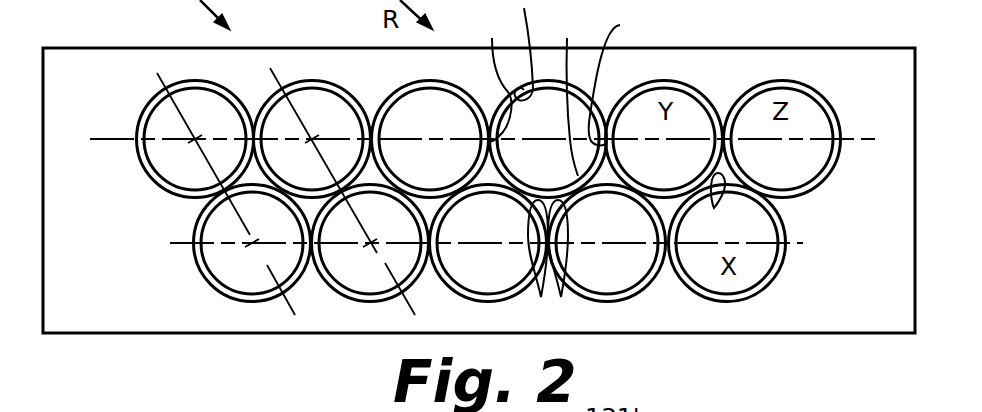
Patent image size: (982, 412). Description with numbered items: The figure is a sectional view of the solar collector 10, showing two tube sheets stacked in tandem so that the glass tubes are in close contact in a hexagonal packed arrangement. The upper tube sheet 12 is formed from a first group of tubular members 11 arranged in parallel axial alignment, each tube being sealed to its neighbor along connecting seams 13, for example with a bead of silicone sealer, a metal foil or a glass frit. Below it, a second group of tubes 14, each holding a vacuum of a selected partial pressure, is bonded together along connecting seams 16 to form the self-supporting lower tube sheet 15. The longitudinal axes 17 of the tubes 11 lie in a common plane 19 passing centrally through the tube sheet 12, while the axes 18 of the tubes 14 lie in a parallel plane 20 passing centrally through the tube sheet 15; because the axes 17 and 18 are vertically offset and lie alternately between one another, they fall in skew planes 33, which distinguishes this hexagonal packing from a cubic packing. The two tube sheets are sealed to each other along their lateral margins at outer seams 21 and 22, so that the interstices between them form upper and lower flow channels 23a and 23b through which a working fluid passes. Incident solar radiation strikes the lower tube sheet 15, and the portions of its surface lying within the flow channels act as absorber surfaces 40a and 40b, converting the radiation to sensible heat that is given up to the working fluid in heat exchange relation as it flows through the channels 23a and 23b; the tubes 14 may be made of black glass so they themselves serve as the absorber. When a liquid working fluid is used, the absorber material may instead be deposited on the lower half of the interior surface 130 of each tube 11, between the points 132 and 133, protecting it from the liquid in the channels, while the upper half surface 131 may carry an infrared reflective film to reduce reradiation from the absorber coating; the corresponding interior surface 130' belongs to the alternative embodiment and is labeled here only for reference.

The solar collector 10 is at (882, 303).
The tubular members 11 is at (410, 82).
The tube sheet 12 is at (140, 113).
The connecting seams 13 is at (253, 117).
The tubular members 14 is at (477, 302).
The tube sheet 15 is at (197, 262).
The connecting seams 16 is at (668, 247).
The longitudinal axes 17 is at (193, 141).
The longitudinal axes 18 is at (254, 247).
The plane 19 is at (853, 135).
The plane 20 is at (803, 243).
The seam 21 is at (213, 200).
The outer seam 22 is at (765, 195).
The upper flow channel 23a is at (722, 168).
The lower flow channel 23b is at (663, 208).
The skew planes 33 is at (412, 307).
The absorber surface 40a is at (716, 182).
The absorber surface 40b is at (550, 264).
The interior surface 130 is at (571, 95).
The surface 131 is at (534, 50).
The point 132 is at (492, 78).
The point 133 is at (628, 79).
The interior surface 130' is at (664, 400).